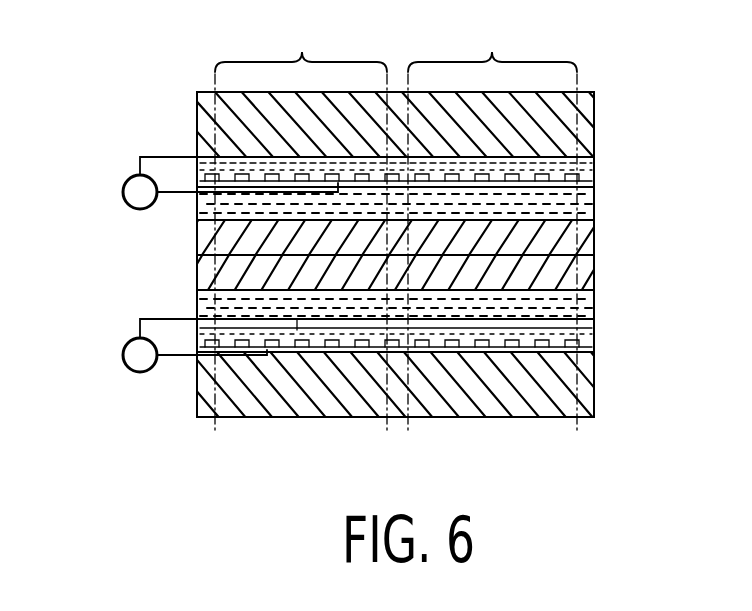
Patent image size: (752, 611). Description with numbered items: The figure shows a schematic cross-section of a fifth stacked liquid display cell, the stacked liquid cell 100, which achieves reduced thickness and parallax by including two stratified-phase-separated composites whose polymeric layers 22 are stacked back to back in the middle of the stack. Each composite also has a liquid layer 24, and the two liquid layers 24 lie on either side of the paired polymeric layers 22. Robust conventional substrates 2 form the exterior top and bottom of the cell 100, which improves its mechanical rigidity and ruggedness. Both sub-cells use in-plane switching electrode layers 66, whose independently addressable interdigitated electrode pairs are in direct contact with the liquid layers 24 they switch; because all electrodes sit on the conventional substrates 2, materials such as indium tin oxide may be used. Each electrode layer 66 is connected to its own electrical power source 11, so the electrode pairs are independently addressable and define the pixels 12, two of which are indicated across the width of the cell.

The stacked liquid cell 100 is at (116, 92).
The substrate layer 2 is at (588, 122).
The in-plane switching electrode layer 66 is at (590, 170).
The liquid layer 24 is at (592, 208).
The polymeric substrate layer 22 is at (592, 248).
The pixel 12 is at (396, 224).
The electrical power source 11 is at (122, 192).